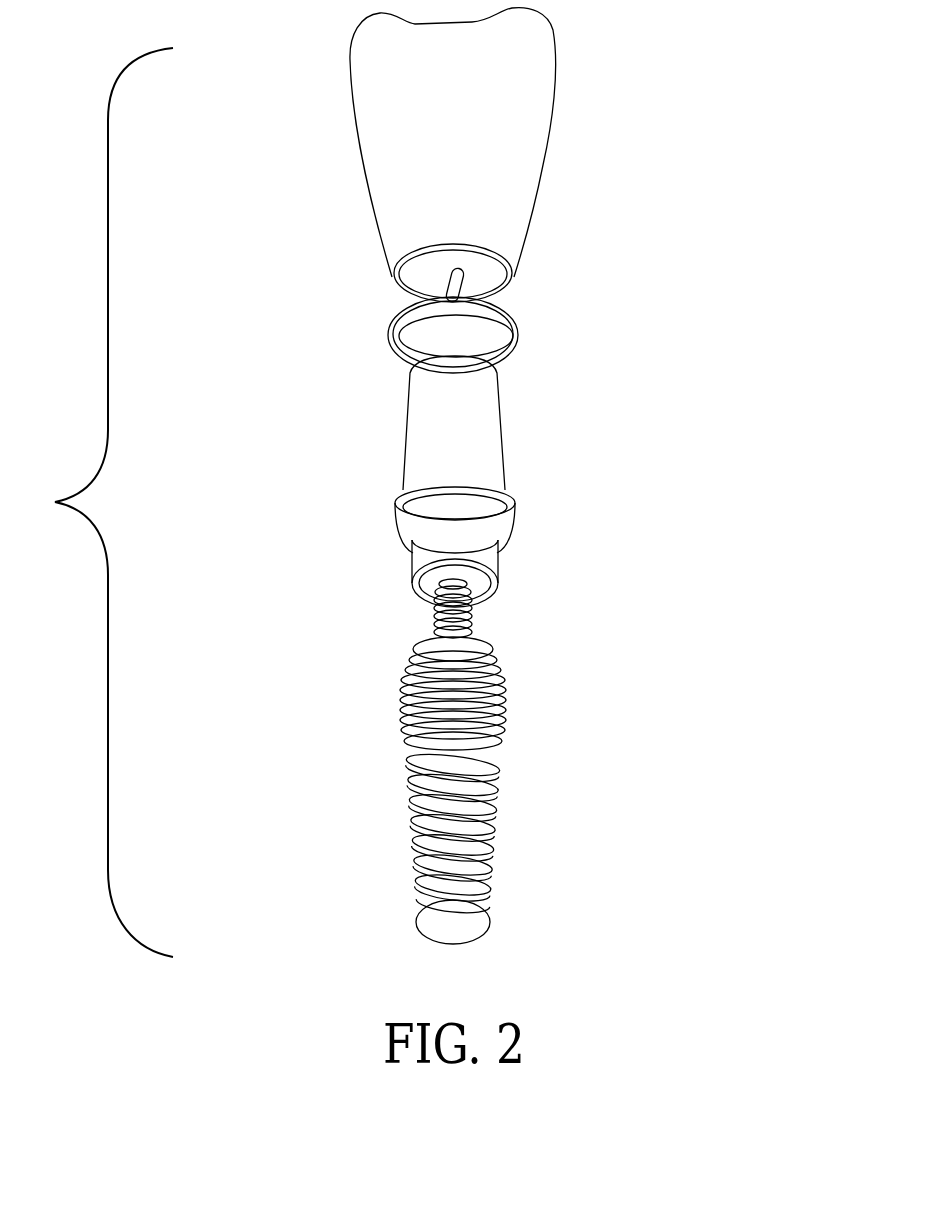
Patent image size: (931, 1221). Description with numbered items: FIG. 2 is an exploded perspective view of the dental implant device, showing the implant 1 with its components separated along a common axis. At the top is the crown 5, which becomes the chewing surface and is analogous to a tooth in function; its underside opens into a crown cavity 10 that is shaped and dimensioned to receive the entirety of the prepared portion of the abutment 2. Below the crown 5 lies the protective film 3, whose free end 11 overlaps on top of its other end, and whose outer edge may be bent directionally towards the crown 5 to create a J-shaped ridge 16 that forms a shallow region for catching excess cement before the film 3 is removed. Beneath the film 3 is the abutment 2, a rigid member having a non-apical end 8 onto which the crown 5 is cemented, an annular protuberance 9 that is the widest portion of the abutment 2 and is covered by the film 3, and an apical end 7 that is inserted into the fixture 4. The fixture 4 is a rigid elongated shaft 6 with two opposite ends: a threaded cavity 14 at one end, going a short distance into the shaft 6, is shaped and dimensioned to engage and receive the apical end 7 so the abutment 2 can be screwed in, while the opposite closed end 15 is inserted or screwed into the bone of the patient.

The implant 1 is at (100, 502).
The abutment 2 is at (495, 453).
The protective film 3 is at (377, 324).
The fixture 4 is at (492, 826).
The crown 5 is at (528, 120).
The shaft 6 is at (514, 742).
The apical end 7 is at (413, 490).
The non-apical end 8 is at (426, 363).
The annular protuberance 9 is at (513, 510).
The crown cavity 10 is at (505, 274).
The free end 11 is at (433, 287).
The threaded cavity 14 is at (512, 646).
The closed end 15 is at (480, 935).
The J-shaped ridge 16 is at (535, 350).